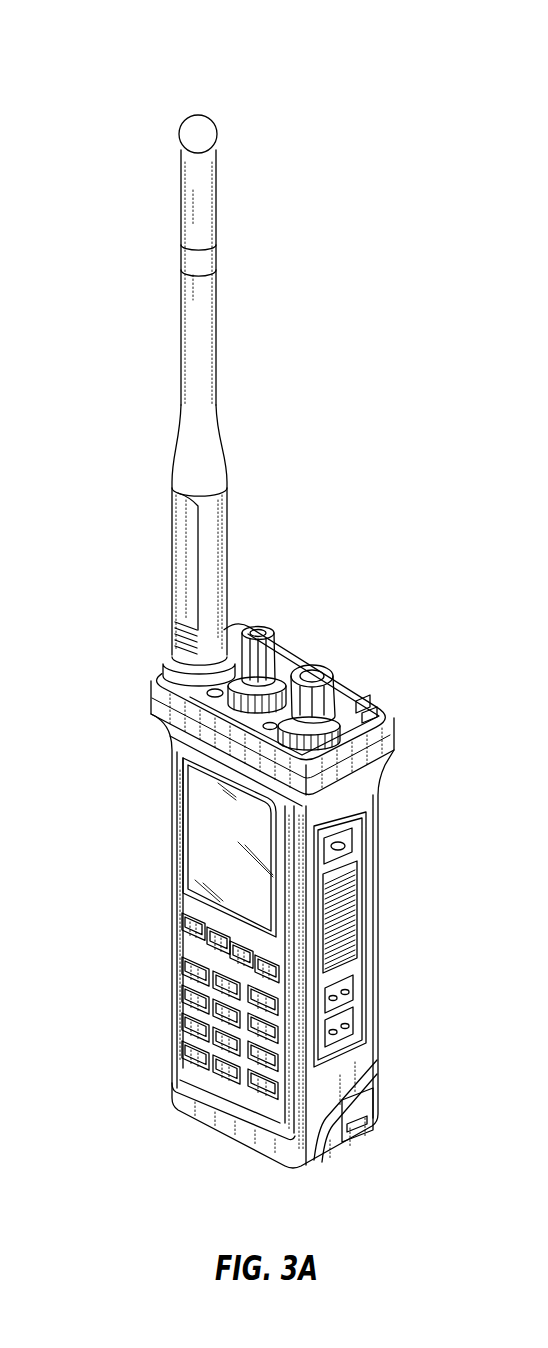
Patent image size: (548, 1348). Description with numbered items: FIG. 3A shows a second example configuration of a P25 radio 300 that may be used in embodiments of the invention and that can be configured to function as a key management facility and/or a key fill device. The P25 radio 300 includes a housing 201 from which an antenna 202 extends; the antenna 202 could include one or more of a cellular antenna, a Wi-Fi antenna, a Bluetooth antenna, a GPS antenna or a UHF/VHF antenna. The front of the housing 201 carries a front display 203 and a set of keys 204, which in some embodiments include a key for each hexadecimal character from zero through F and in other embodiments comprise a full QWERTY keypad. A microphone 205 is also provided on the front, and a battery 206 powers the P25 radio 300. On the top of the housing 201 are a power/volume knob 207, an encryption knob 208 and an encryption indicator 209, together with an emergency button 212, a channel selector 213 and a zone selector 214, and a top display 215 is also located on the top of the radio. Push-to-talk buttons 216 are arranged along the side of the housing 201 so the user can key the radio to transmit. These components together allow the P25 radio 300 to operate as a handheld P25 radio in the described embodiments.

The P25 radio 300 is at (222, 60).
The housing 201 is at (151, 677).
The antenna 202 is at (217, 211).
The front display 203 is at (201, 829).
The keys 204 is at (158, 1007).
The microphone 205 is at (233, 932).
The battery 206 is at (379, 1068).
The power/volume knob 207 is at (341, 670).
The encryption knob 208 is at (342, 722).
The encryption indicator 209 is at (371, 732).
The emergency button 212 is at (238, 623).
The channel selector 213 is at (277, 621).
The zone selector 214 is at (291, 665).
The top display 215 is at (330, 653).
The push-to-talk buttons 216 is at (382, 965).